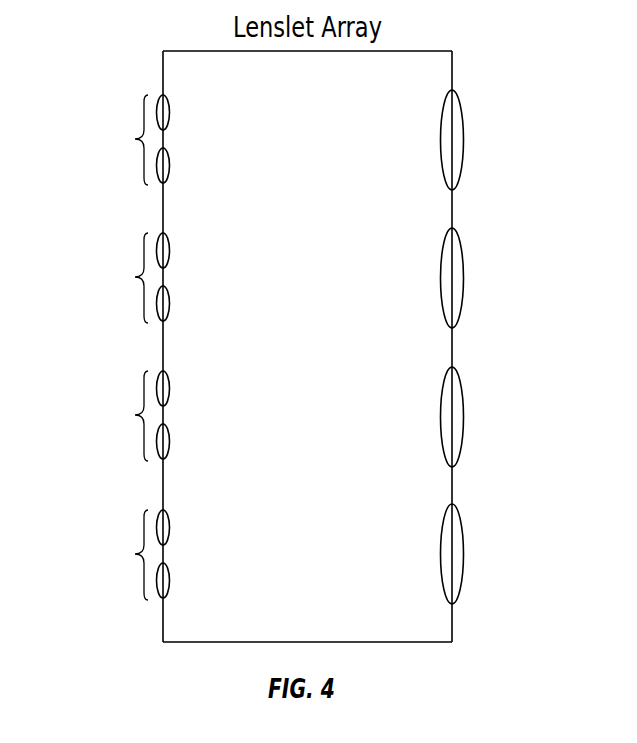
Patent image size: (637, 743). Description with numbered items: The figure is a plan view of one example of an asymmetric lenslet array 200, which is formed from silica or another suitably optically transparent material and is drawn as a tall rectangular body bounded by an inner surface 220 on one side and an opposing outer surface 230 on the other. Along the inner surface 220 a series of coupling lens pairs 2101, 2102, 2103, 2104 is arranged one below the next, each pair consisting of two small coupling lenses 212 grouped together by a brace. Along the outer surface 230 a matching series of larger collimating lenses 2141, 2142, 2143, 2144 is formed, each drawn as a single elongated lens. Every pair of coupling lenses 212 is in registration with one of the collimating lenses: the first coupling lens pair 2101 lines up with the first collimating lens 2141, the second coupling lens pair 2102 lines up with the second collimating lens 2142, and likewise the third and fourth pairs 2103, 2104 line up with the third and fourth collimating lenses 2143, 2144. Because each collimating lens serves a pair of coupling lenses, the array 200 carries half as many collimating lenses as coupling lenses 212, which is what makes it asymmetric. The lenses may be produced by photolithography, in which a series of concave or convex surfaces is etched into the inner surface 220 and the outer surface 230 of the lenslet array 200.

The lenslet array 200 is at (163, 218).
The inner surface 220 is at (163, 70).
The outer surface 230 is at (452, 70).
The coupling lens 212 is at (170, 112).
The first coupling lens pair 2101 is at (135, 139).
The second coupling lens pair 2102 is at (135, 277).
The third coupling lens pair 2103 is at (135, 415).
The fourth coupling lens pair 2104 is at (135, 554).
The first collimating lens 2141 is at (464, 138).
The second collimating lens 2142 is at (464, 278).
The third collimating lens 2143 is at (464, 417).
The fourth collimating lens 2144 is at (464, 555).